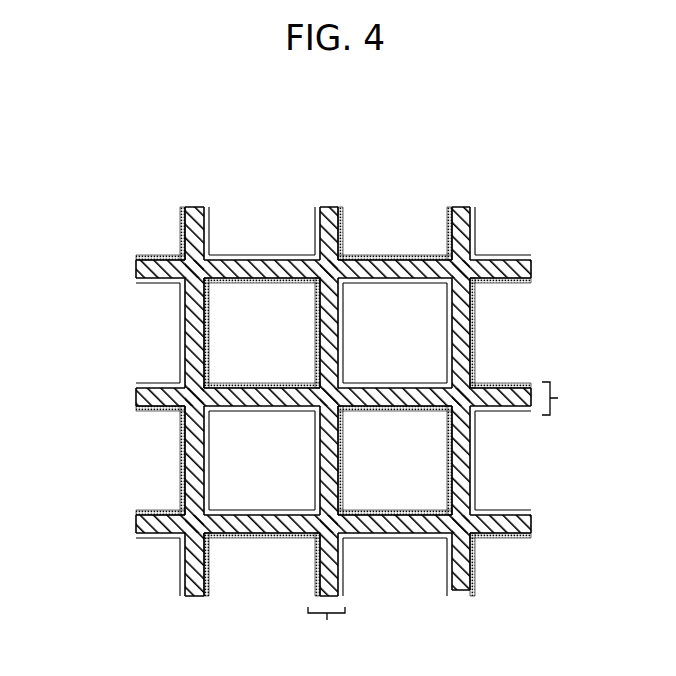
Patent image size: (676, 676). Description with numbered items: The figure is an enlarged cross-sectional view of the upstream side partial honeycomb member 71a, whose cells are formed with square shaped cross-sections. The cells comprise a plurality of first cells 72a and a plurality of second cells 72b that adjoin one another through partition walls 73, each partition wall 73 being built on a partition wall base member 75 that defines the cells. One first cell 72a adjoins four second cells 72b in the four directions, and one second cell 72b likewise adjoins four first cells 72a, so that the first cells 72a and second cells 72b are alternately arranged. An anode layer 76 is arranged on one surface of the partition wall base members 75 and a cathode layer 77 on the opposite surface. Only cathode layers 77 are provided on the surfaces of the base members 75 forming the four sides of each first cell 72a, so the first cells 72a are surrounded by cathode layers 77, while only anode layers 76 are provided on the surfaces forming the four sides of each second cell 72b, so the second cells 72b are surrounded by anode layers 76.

The upstream side partial honeycomb member 71a is at (517, 162).
The first cells 72a is at (262, 307).
The second cells 72b is at (497, 438).
The partition wall 73 is at (448, 516).
The partition wall base members 75 is at (517, 525).
The anode layer 76 is at (407, 257).
The cathode layer 77 is at (187, 313).